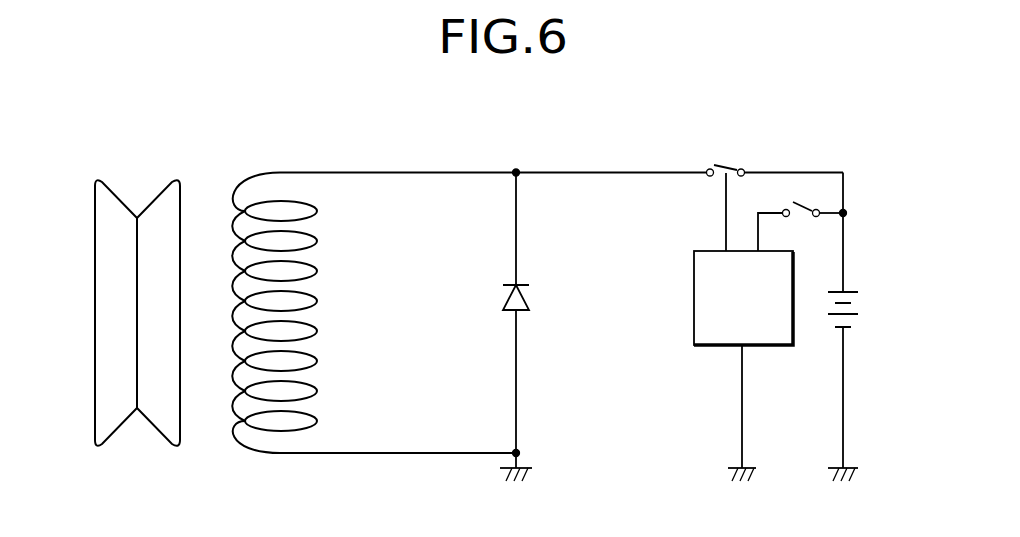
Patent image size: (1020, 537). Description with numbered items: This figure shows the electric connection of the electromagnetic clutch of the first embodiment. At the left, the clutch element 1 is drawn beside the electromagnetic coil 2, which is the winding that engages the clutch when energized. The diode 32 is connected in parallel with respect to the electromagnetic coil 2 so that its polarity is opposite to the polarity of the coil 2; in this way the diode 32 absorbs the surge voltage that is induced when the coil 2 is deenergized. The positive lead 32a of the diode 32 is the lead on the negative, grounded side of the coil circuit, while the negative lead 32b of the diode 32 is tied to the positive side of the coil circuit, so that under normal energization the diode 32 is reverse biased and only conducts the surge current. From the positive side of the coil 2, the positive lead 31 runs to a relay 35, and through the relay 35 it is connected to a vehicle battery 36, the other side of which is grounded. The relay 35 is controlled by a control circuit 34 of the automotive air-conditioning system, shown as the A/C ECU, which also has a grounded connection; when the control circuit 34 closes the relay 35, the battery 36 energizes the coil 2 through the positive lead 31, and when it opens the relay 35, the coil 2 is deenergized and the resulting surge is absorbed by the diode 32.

The pulley 1 is at (108, 331).
The electromagnetic coil 2 is at (245, 177).
The positive lead 31 is at (640, 172).
The diode 32 is at (502, 296).
The positive lead of the diode 32a is at (517, 367).
The negative lead of the diode 32b is at (517, 213).
The control circuit 34 is at (693, 328).
The relay 35 is at (730, 167).
The vehicle battery 36 is at (858, 307).